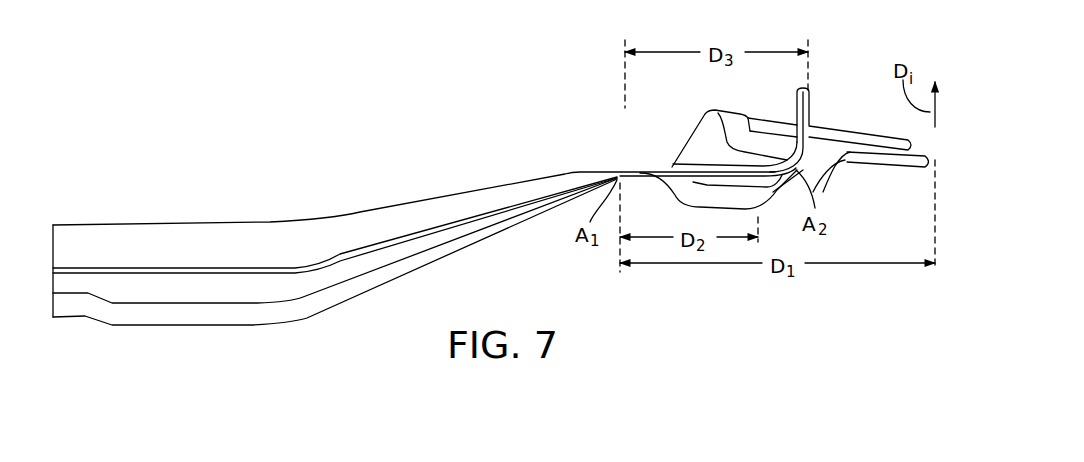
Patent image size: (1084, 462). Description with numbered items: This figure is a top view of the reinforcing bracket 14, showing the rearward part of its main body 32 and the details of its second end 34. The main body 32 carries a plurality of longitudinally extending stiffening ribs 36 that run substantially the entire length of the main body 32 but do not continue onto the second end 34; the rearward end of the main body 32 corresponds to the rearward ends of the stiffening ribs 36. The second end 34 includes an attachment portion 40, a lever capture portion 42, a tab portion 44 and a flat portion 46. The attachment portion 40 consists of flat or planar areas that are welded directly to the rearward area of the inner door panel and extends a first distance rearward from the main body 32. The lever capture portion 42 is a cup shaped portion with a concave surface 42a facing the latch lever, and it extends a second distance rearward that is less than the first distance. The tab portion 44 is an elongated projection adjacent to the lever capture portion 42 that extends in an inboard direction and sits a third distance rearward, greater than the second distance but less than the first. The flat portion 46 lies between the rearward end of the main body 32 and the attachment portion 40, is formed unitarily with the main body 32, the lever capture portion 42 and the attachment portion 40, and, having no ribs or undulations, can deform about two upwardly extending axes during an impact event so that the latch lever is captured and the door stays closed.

The reinforcing bracket 14 is at (252, 185).
The main body 32 is at (154, 223).
The second end 34 is at (698, 119).
The stiffening ribs 36 is at (228, 309).
The attachment portion 40 is at (862, 132).
The lever capture portion 42 is at (697, 192).
The concave surface 42a is at (707, 170).
The tab portion 44 is at (810, 99).
The flat portion 46 is at (633, 172).